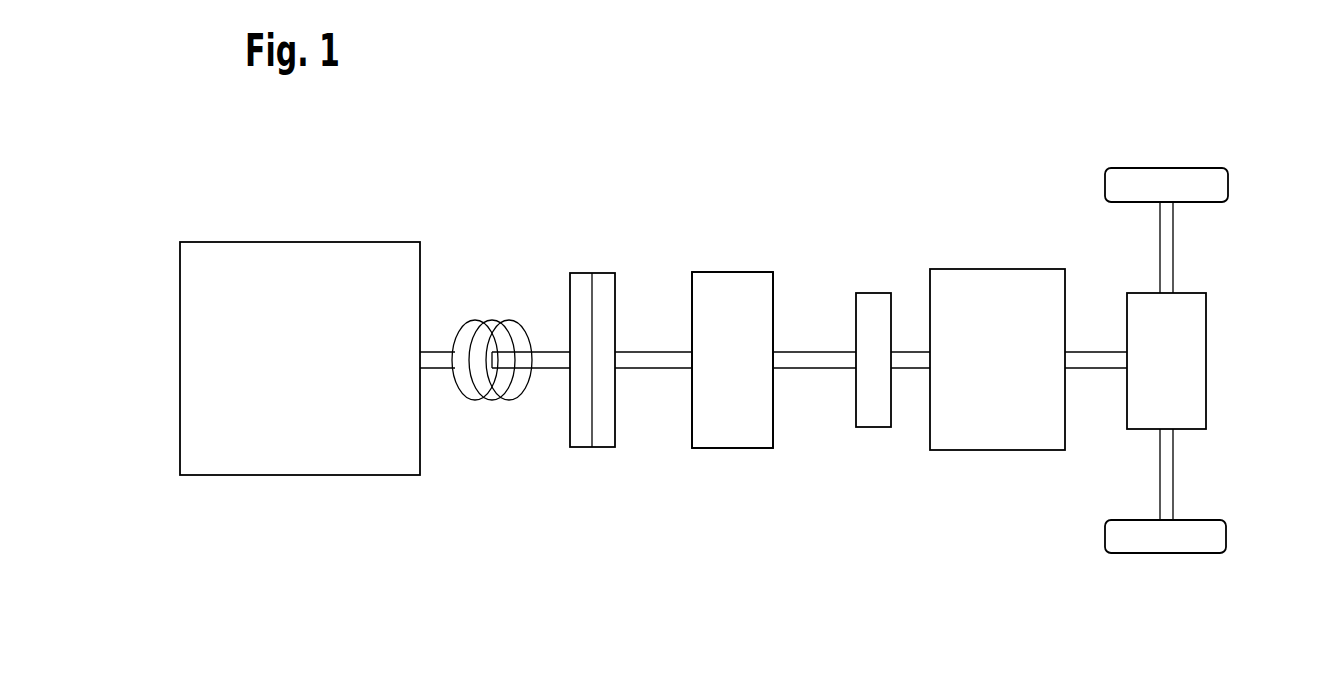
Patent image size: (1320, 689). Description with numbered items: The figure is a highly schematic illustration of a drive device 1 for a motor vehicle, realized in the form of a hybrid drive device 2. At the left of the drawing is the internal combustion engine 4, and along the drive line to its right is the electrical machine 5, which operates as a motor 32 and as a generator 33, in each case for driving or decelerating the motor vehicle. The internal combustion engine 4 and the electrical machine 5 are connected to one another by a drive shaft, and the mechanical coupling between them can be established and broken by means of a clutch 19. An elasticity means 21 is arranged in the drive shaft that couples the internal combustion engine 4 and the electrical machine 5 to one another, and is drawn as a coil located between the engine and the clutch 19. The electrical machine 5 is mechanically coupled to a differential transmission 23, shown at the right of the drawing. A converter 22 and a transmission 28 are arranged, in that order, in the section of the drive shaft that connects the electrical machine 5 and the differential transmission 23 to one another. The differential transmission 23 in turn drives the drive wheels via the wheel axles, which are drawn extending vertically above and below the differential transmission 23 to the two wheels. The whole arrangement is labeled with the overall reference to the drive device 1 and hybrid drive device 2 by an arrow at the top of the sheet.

The drive device 1 is at (958, 86).
The hybrid drive device 2 is at (958, 86).
The internal combustion engine 4 is at (291, 272).
The electrical machine 5 is at (728, 290).
The motor 32 is at (728, 290).
The generator 33 is at (728, 290).
The clutch 19 is at (603, 285).
The elasticity means 21 is at (493, 330).
The converter 22 is at (872, 305).
The differential transmission 23 is at (1193, 363).
The transmission 28 is at (995, 285).